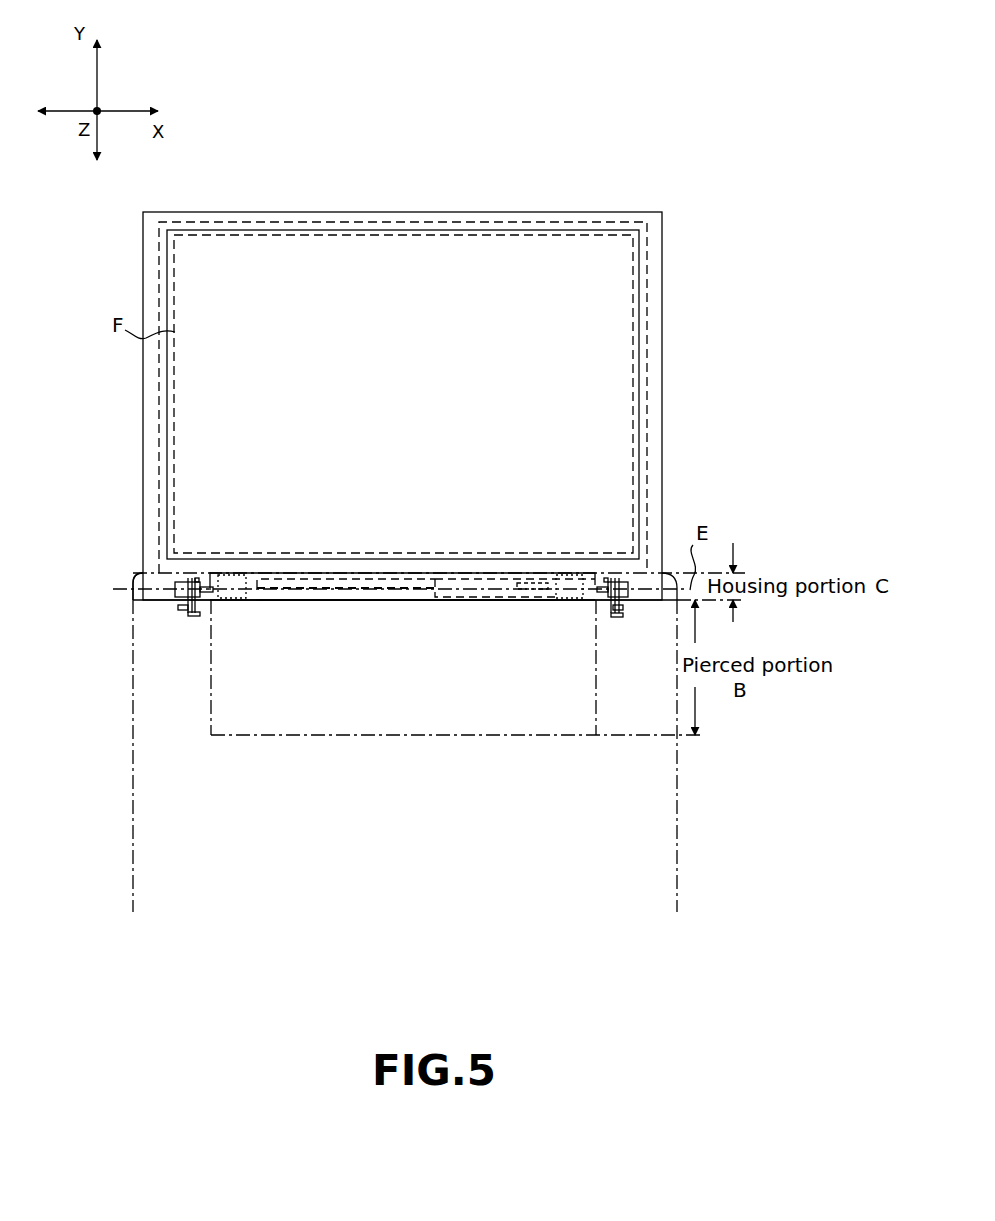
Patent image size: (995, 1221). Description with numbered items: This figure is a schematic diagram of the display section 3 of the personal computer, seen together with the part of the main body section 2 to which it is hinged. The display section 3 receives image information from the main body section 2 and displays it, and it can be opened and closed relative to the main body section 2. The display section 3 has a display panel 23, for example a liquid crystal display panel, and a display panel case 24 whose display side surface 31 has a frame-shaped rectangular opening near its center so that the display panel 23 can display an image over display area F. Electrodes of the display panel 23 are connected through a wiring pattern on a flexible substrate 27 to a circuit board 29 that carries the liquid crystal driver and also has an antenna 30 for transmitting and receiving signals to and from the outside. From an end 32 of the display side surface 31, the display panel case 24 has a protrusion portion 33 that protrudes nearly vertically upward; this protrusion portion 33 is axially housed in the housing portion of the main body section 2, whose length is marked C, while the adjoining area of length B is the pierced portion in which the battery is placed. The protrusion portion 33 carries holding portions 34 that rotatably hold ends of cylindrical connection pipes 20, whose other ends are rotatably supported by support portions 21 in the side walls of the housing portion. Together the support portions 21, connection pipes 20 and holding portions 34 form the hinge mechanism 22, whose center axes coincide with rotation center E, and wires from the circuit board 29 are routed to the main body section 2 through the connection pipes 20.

The main body section 2 is at (685, 797).
The display section 3 is at (677, 192).
The connection pipes 20 is at (207, 582).
The support portions 21 is at (182, 610).
The hinge mechanism 22 is at (228, 563).
The display panel 23 is at (160, 283).
The display panel case 24 is at (147, 233).
The flexible substrate 27 is at (467, 572).
The circuit board 29 is at (300, 591).
The antenna 30 is at (450, 600).
The display side surface 31 is at (500, 217).
The end 32 is at (132, 602).
The protrusion portion 33 is at (353, 607).
The holding portions 34 is at (223, 603).